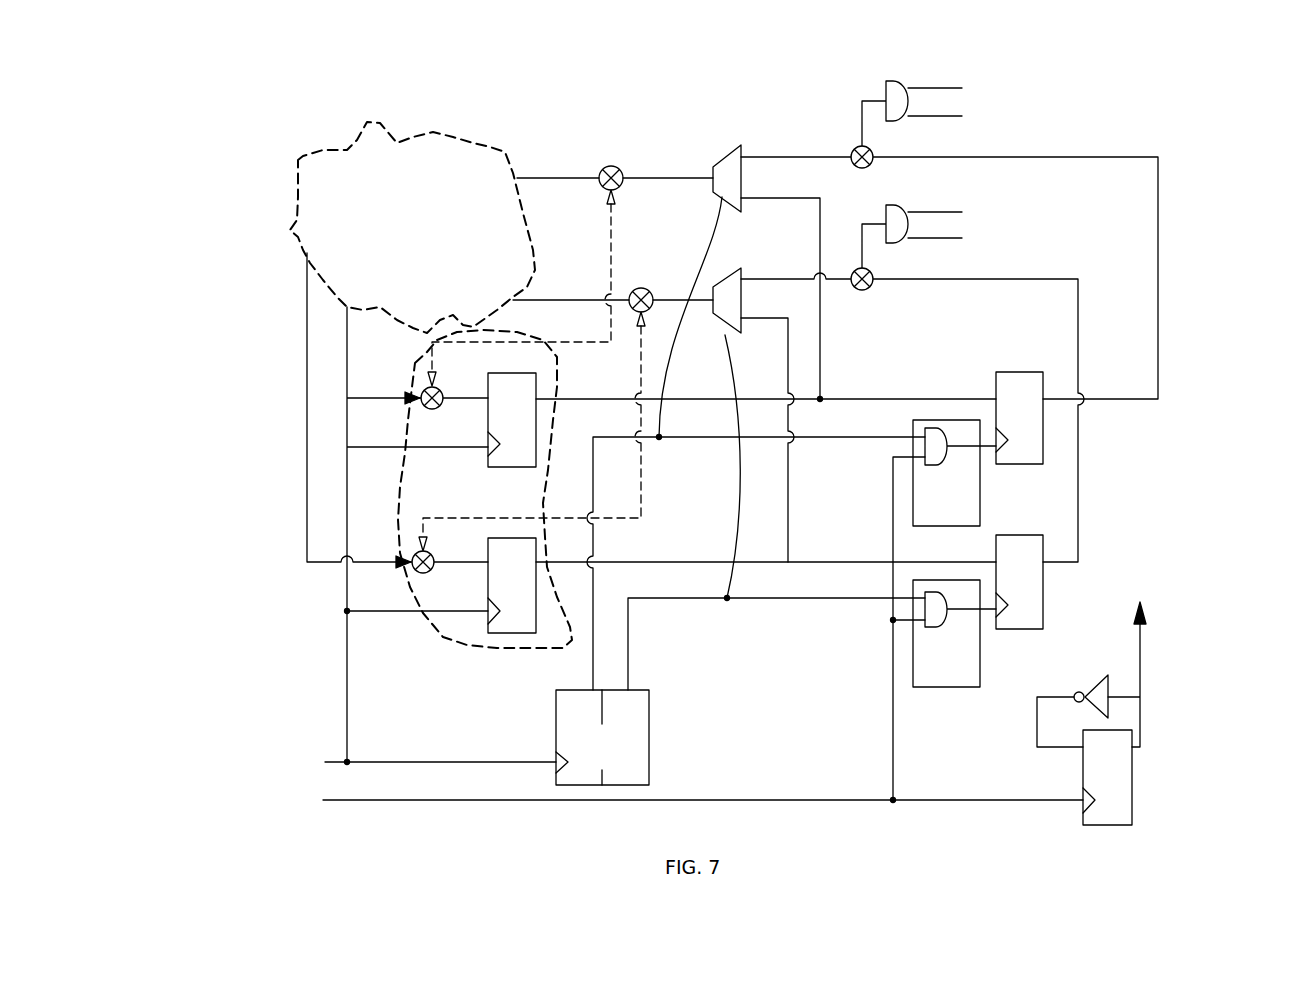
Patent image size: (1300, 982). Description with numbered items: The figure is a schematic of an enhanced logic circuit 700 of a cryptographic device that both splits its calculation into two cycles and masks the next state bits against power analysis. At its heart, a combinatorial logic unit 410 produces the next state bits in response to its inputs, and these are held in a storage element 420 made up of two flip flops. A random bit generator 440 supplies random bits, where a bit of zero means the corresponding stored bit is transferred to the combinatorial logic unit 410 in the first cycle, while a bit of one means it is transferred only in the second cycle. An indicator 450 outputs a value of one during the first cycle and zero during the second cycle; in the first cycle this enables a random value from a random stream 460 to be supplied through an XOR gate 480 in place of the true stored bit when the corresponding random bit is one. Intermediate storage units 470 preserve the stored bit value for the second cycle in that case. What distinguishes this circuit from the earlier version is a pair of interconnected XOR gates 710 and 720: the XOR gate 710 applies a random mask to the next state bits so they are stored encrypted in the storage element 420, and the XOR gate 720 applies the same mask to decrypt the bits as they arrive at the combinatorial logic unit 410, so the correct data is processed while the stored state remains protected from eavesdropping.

The enhanced logic circuit 700 is at (262, 136).
The combinatorial logic unit 410 is at (483, 148).
The storage element 420 is at (470, 650).
The random bit generator 440 is at (649, 748).
The indicator 450 is at (1140, 730).
The random stream 460 is at (1030, 75).
The intermediate storage units 470 is at (1043, 437).
The XOR gate 480 is at (852, 168).
The XOR gate 710 is at (418, 372).
The XOR gate 720 is at (622, 166).